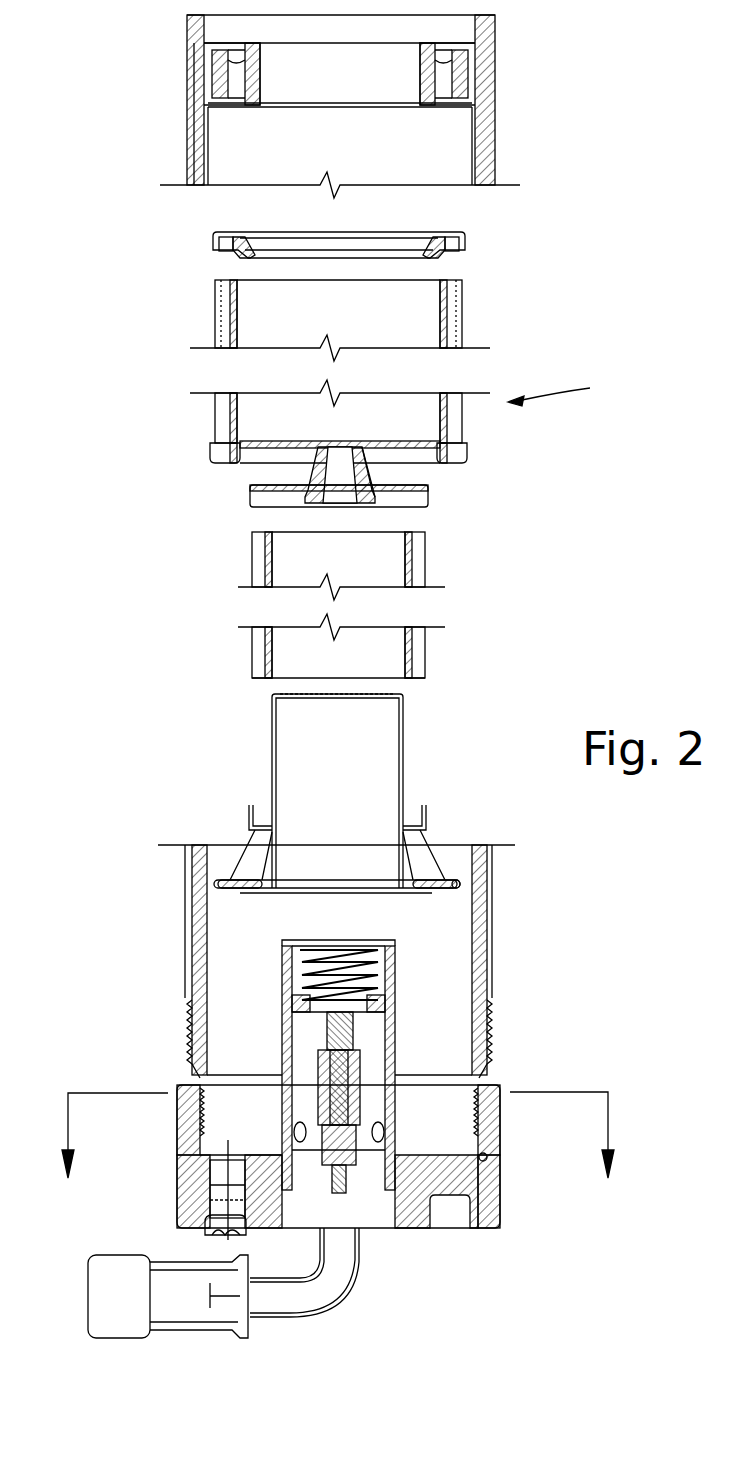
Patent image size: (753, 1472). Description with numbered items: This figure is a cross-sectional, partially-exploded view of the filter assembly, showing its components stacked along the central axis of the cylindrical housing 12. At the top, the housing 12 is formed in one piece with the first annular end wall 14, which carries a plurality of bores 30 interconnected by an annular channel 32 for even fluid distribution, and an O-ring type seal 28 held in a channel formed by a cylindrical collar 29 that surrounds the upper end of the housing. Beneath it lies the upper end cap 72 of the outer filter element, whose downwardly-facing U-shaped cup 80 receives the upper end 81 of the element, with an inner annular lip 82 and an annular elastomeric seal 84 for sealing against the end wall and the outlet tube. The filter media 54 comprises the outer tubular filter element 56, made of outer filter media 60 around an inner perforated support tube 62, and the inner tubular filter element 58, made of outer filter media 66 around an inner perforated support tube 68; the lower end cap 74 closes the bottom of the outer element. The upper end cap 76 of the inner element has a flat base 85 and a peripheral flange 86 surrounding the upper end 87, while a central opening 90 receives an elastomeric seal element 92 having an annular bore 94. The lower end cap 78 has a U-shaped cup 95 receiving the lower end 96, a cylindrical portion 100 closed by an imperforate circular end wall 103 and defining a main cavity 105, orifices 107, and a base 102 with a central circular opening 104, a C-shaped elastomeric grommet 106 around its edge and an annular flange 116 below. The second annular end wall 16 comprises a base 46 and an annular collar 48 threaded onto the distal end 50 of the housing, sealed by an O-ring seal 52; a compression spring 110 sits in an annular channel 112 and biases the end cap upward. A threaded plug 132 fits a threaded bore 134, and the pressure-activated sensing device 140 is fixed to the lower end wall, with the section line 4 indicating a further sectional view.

The section line 4- 4 is at (334, 1135).
The cylindrical housing 12 is at (330, 106).
The first annular end wall 14 is at (413, 45).
The second annular end wall 16 is at (337, 1186).
The O-ring type seal 28 is at (187, 33).
The cylindrical collar 29 is at (190, 92).
The bores 30 is at (452, 82).
The annular channel 32 is at (227, 50).
The base 46 is at (445, 1210).
The annular collar 48 is at (190, 1137).
The distal end 50 is at (195, 1060).
The O-ring seal 52 is at (486, 1161).
The filter media 54 is at (567, 391).
The outer tubular filter element 56 is at (378, 419).
The inner tubular filter element 58 is at (337, 559).
The outer filter media 60 is at (337, 320).
The inner perforated support tube 62 is at (440, 308).
The outer filter media 66 is at (335, 622).
The inner perforated support tube 68 is at (405, 552).
The upper end cap 72 is at (342, 231).
The lower end cap 74 is at (212, 458).
The upper end cap 76 is at (332, 501).
The lower end cap 78 is at (428, 810).
The U-shaped cup 80 is at (215, 256).
The upper end 81 is at (225, 280).
The inner annular lip 82 is at (243, 243).
The annular elastomeric seal 84 is at (432, 240).
The flat base 85 is at (237, 458).
The peripheral flange 86 is at (428, 497).
The upper end 87 is at (252, 534).
The central opening 90 is at (330, 450).
The elastomeric seal element 92 is at (364, 478).
The annular bore 94 is at (340, 460).
The U-shaped cup 95 is at (250, 808).
The lower end 96 is at (253, 660).
The cylindrical portion 100 is at (315, 829).
The base 102 is at (274, 891).
The imperforate circular end wall 103 is at (380, 698).
The central circular opening 104 is at (322, 882).
The main cavity 105 is at (294, 765).
The C-shaped elastomeric grommet 106 is at (225, 882).
The orifices 107 is at (428, 830).
The compression spring 110 is at (283, 1122).
The annular channel 112 is at (403, 1160).
The annular flange 116 is at (418, 890).
The threaded plug 132 is at (222, 1197).
The threaded bore 134 is at (218, 1163).
The pressure-activated sensing device 140 is at (402, 1066).